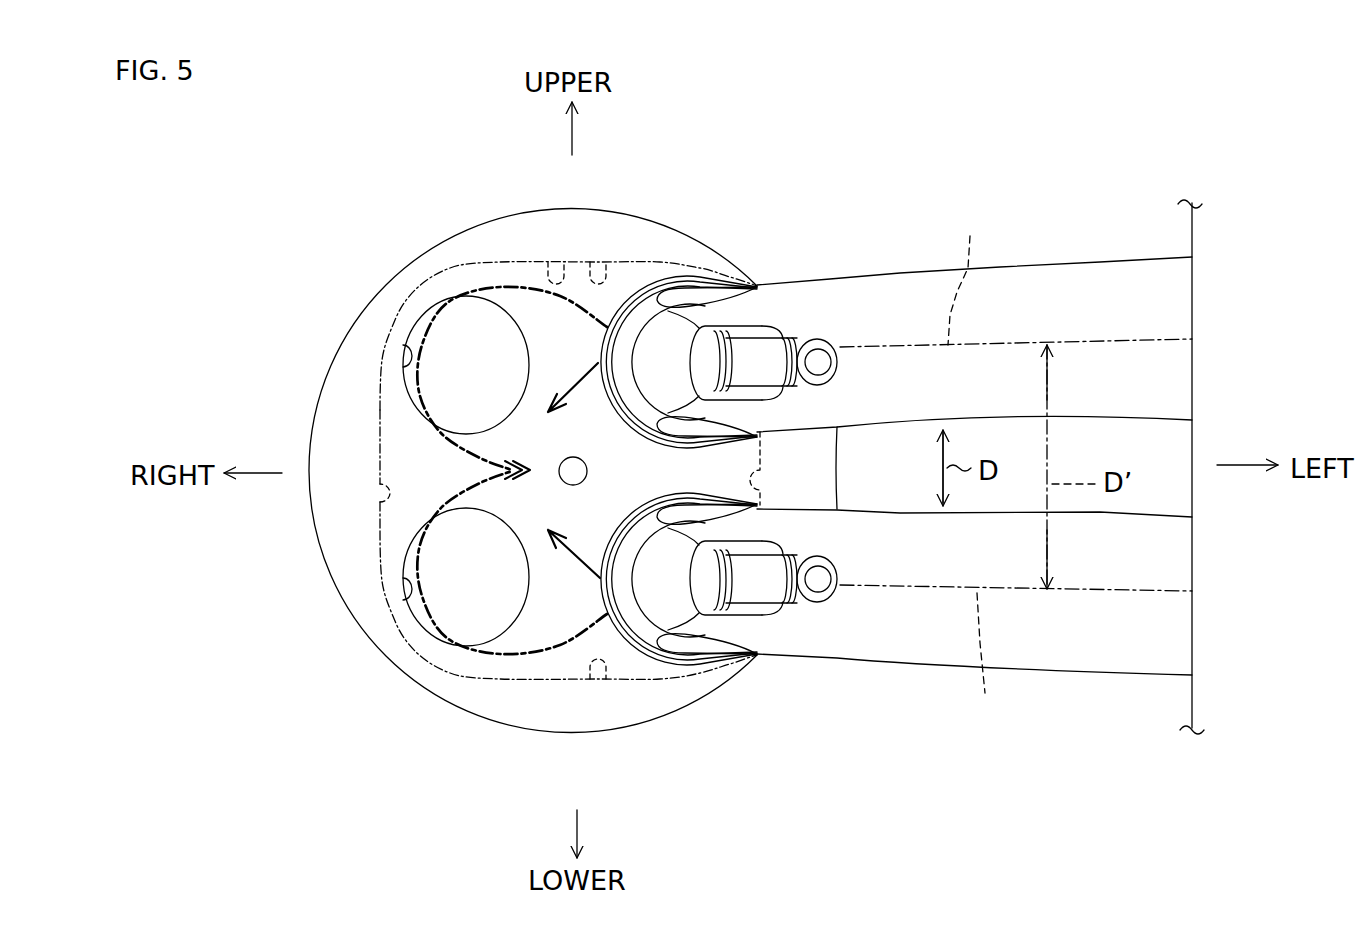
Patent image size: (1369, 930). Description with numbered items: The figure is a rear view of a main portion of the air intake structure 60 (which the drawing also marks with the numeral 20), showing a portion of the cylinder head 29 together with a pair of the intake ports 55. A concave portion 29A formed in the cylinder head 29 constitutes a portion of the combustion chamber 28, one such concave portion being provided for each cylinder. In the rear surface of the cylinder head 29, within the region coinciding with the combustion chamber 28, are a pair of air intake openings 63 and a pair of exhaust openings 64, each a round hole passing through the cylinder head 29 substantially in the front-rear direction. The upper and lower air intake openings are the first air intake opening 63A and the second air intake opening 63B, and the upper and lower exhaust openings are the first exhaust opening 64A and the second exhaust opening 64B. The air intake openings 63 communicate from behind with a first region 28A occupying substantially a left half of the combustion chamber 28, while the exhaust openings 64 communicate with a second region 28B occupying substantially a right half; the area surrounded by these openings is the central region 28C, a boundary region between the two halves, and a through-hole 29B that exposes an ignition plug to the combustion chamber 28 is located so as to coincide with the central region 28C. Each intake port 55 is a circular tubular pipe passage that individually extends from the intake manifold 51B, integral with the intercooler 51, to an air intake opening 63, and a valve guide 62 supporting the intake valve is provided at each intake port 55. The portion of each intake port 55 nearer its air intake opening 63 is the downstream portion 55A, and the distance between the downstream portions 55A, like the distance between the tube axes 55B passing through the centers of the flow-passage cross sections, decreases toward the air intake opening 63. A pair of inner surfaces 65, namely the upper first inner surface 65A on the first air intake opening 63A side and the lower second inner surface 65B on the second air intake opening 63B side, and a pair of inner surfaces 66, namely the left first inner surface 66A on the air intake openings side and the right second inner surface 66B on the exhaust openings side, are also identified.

The gas burner unit 20 is at (817, 100).
The air intake structure 60 is at (868, 94).
The cylinder head 29 is at (410, 285).
The combustion chamber 28 is at (600, 264).
The concave portion 29A is at (568, 416).
The first region 28A is at (713, 465).
The second region 28B is at (460, 474).
The central region 28C is at (560, 476).
The through-hole 29B is at (590, 471).
The intercooler 51 is at (1187, 443).
The intake manifold 51B is at (1192, 237).
The intake port 55 is at (1075, 276).
The downstream portion 55A is at (860, 285).
The tube axis 55B is at (981, 471).
The valve guide 62 is at (818, 363).
The air intake opening 63 is at (719, 474).
The first air intake opening 63A is at (660, 347).
The second air intake opening 63B is at (660, 595).
The exhaust opening 64 is at (393, 477).
The first exhaust opening 64A is at (405, 352).
The second exhaust opening 64B is at (405, 600).
The inner surface 65 is at (603, 467).
The first inner surface 65A is at (548, 265).
The second inner surface 65B is at (603, 676).
The inner surface 66 is at (589, 498).
The first inner surface 66A is at (757, 497).
The second inner surface 66B is at (377, 500).